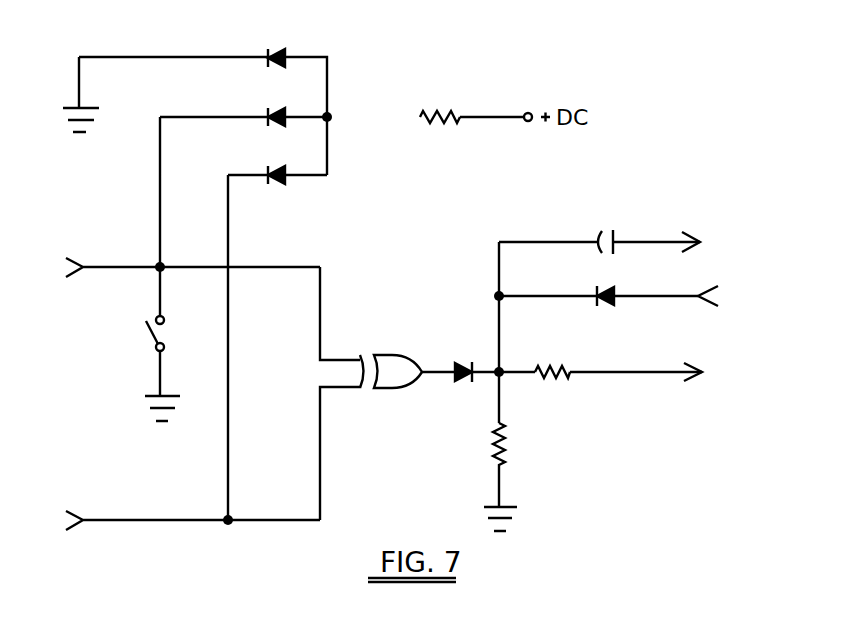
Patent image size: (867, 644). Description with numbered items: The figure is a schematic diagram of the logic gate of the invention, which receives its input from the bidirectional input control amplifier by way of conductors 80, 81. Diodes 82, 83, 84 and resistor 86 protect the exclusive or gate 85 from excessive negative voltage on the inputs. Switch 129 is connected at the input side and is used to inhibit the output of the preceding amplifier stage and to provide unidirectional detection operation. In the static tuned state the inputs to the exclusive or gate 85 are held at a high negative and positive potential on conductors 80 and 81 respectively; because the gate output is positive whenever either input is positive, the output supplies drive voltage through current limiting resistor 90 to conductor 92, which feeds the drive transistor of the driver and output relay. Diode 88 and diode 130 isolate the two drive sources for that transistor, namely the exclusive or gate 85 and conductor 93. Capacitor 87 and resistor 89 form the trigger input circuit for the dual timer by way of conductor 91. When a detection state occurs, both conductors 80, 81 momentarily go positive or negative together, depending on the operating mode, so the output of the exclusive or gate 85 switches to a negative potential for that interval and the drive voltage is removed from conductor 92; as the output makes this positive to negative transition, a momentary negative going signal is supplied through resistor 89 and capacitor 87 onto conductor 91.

The conductor 80 is at (173, 267).
The conductor 81 is at (176, 522).
The diode 82 is at (282, 46).
The diode 83 is at (282, 106).
The diode 84 is at (282, 164).
The exclusive or gate 85 is at (407, 355).
The resistor 86 is at (440, 105).
The capacitor 87 is at (599, 226).
The diode 88 is at (466, 359).
The resistor 89 is at (493, 477).
The current limiting resistor 90 is at (552, 384).
The conductor 91 is at (707, 242).
The conductor 92 is at (709, 372).
The conductor 93 is at (725, 296).
The switch 129 is at (148, 368).
The diode 130 is at (598, 310).